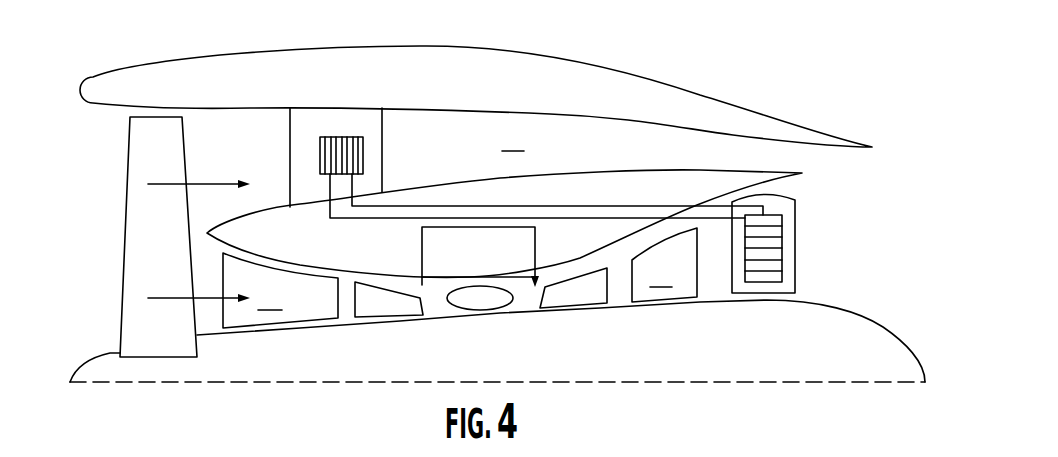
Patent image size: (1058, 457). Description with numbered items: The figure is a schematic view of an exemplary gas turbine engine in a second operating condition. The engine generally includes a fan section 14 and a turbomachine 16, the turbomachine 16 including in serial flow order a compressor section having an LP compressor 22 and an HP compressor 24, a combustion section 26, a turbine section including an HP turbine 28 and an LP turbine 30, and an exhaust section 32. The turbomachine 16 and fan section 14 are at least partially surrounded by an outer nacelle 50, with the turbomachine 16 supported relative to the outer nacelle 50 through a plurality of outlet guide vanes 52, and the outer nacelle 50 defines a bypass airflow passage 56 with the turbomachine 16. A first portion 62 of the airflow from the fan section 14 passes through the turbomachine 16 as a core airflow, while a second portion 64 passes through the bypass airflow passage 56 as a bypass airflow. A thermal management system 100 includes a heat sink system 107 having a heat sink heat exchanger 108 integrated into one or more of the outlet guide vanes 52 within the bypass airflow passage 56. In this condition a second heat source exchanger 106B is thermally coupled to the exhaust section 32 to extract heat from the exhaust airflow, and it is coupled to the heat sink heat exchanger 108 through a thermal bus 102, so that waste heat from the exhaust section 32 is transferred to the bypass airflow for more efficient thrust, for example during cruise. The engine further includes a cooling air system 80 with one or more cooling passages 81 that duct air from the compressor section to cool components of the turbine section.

The fan section 14 is at (103, 165).
The turbomachine 16 is at (577, 198).
The LP compressor 22 is at (280, 290).
The HP compressor 24 is at (382, 308).
The combustion section 26 is at (503, 272).
The HP turbine 28 is at (578, 295).
The LP turbine 30 is at (664, 265).
The exhaust section 32 is at (797, 277).
The outer nacelle 50 is at (393, 68).
The outlet guide vanes 52 is at (288, 165).
The bypass airflow passage 56 is at (513, 137).
The first portion of airflow 62 is at (177, 295).
The second portion of airflow 64 is at (210, 182).
The cooling air system 80 is at (513, 223).
The cooling passages 81 is at (422, 253).
The thermal management system 100 is at (433, 165).
The thermal bus 102 is at (350, 221).
The second heat source exchanger 106B is at (782, 233).
The heat sink system 107 is at (334, 125).
The heat sink heat exchanger 108 is at (318, 152).